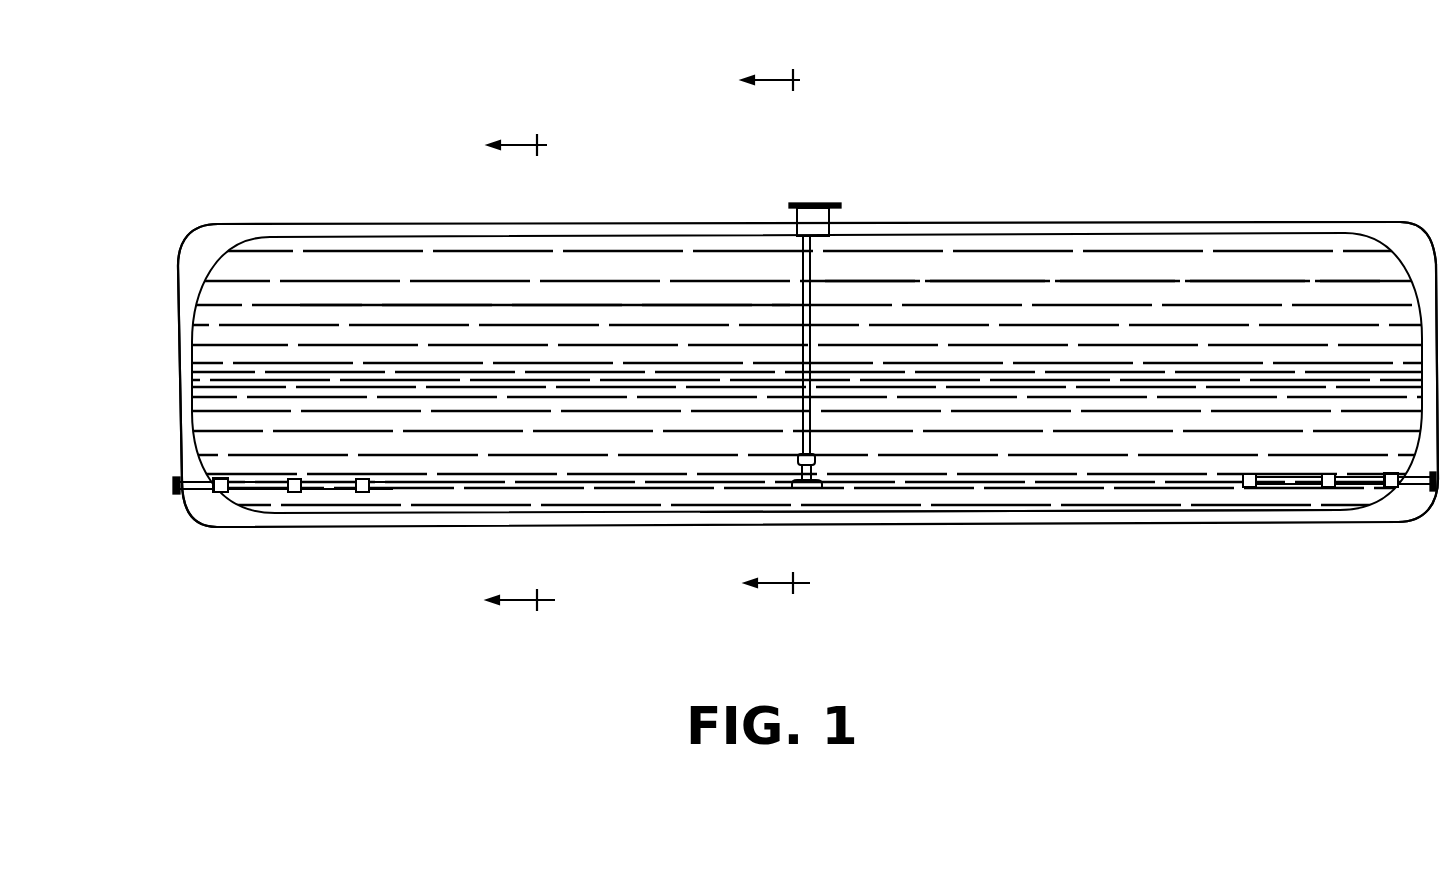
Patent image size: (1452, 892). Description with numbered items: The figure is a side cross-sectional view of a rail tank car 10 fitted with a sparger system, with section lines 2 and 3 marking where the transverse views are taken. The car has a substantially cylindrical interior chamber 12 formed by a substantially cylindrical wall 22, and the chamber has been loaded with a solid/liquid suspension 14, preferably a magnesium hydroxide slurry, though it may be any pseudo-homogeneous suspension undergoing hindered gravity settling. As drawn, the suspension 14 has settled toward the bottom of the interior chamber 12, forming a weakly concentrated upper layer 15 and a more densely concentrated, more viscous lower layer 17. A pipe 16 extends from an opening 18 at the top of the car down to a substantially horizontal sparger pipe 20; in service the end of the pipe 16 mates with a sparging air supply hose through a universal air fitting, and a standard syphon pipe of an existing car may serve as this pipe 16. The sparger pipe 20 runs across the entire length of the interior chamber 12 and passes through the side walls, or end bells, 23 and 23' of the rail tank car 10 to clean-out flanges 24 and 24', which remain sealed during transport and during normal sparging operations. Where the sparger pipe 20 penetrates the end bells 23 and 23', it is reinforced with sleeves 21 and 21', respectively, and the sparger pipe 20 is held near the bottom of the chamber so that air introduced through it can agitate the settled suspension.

The section line 2- 2 is at (521, 375).
The section line 3- 3 is at (776, 334).
The rail tank car 10 is at (395, 90).
The interior chamber 12 is at (262, 268).
The solid/liquid suspension 14 is at (568, 308).
The upper layer 15 is at (1045, 282).
The pipe 16 is at (815, 316).
The lower layer 17 is at (1085, 436).
The opening 18 is at (822, 203).
The sparger pipe 20 is at (328, 482).
The sleeve 21 is at (214, 533).
The sleeve 21' is at (1377, 453).
The cylindrical wall 22 is at (398, 224).
The side wall 23 is at (172, 370).
The side wall 23' is at (1414, 342).
The clean-out flange 24 is at (152, 516).
The clean-out flange 24' is at (1414, 527).